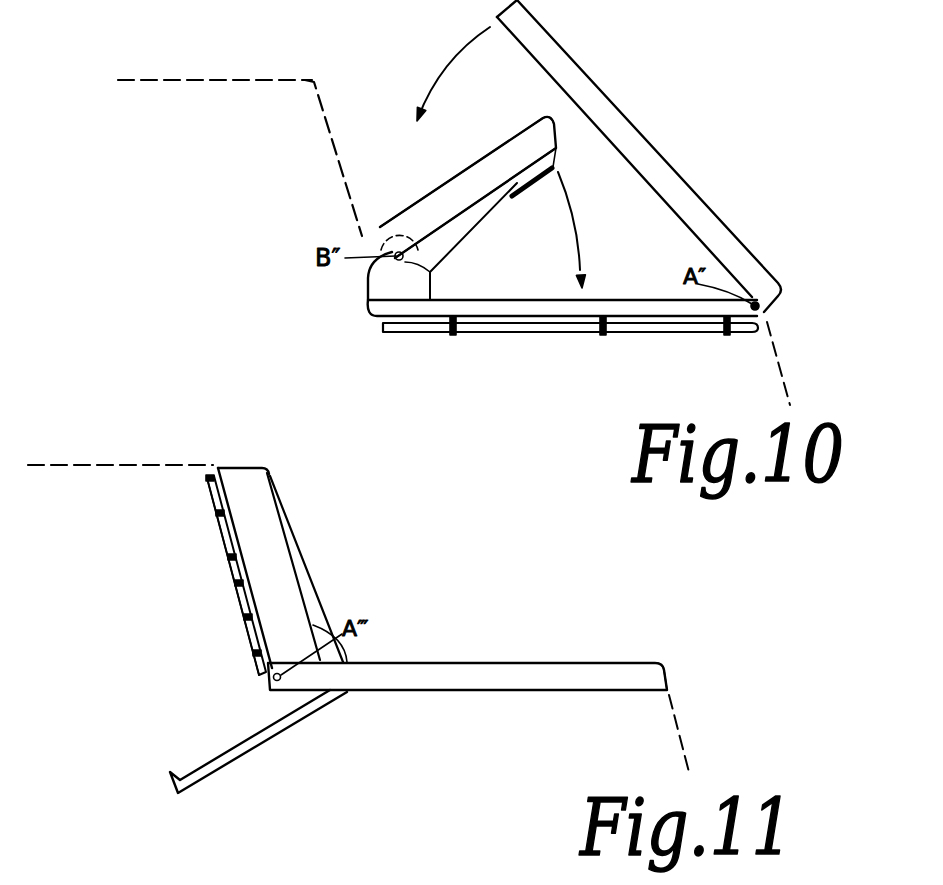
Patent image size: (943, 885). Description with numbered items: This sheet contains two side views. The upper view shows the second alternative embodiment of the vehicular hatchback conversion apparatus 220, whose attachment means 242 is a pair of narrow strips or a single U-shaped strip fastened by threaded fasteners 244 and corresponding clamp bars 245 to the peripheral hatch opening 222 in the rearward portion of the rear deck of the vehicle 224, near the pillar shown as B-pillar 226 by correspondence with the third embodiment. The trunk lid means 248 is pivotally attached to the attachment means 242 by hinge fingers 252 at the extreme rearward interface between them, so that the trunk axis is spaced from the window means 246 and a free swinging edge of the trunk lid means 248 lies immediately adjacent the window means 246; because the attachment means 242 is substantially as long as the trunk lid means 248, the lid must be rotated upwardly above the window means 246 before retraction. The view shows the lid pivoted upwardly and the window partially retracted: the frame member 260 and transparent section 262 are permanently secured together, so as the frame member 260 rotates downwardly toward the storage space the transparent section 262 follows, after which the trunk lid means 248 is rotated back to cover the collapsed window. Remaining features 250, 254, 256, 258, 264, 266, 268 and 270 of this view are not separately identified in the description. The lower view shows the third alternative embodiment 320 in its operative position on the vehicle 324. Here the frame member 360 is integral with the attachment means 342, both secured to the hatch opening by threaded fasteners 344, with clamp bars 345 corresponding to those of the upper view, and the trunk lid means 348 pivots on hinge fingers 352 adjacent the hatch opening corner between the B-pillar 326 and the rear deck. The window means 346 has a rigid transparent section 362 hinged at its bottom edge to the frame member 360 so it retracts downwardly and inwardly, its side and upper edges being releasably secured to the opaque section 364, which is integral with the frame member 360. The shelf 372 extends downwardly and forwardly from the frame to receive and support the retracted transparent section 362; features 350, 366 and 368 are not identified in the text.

In FIG. 10, the second alternative embodiment of the apparatus 220 is at (569, 199).
In FIG. 10, the peripheral hatch opening 222 is at (327, 117).
In FIG. 10, the vehicle 224 is at (197, 79).
In FIG. 10, the frame member 226 is at (287, 103).
In FIG. 10, the attachment means 242 is at (523, 333).
In FIG. 10, the threaded fasteners 244 is at (454, 334).
In FIG. 10, the clamp bars 245 is at (667, 334).
In FIG. 10, the window means 246 is at (495, 228).
In FIG. 10, the trunk lid means 248 is at (610, 97).
In FIG. 10, the frame bar surface 250 is at (685, 180).
In FIG. 10, the hinge fingers 252 is at (760, 310).
In FIG. 10, the arm 254 is at (474, 166).
In FIG. 10, the arm inner edge 256 is at (420, 240).
In FIG. 10, the hinge 258 is at (417, 259).
In FIG. 10, the frame member 260 is at (515, 137).
In FIG. 10, the transparent section 262 is at (458, 247).
In FIG. 10, the lip 264 is at (507, 183).
In FIG. 10, the arm end 266 is at (541, 116).
In FIG. 10, the arm corner 268 is at (378, 229).
In FIG. 10, the arm surface 270 is at (428, 203).
In FIG. 11, the third alternative embodiment of the apparatus 320 is at (392, 596).
In FIG. 11, the vehicle 324 is at (115, 463).
In FIG. 11, the B-pillar 326 is at (177, 493).
In FIG. 11, the attachment means 342 is at (231, 567).
In FIG. 11, the threaded fasteners 344 is at (250, 650).
In FIG. 11, the rail strip 345 is at (223, 527).
In FIG. 11, the window means 346 is at (306, 552).
In FIG. 11, the trunk lid means 348 is at (600, 663).
In FIG. 11, the base 350 is at (517, 663).
In FIG. 11, the hinge fingers 352 is at (268, 686).
In FIG. 11, the frame member 360 is at (270, 520).
In FIG. 11, the transparent section 362 is at (317, 590).
In FIG. 11, the opaque section 364 is at (260, 480).
In FIG. 11, the wall corner 366 is at (218, 467).
In FIG. 11, the spring hook 368 is at (345, 660).
In FIG. 11, the shelf 372 is at (282, 728).